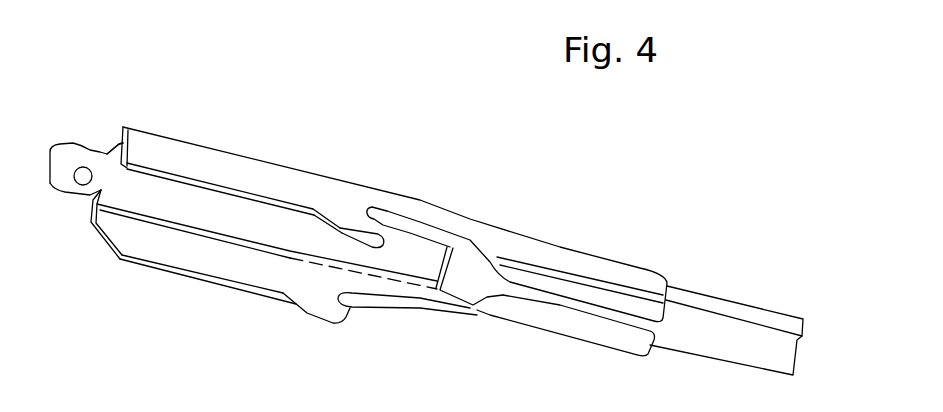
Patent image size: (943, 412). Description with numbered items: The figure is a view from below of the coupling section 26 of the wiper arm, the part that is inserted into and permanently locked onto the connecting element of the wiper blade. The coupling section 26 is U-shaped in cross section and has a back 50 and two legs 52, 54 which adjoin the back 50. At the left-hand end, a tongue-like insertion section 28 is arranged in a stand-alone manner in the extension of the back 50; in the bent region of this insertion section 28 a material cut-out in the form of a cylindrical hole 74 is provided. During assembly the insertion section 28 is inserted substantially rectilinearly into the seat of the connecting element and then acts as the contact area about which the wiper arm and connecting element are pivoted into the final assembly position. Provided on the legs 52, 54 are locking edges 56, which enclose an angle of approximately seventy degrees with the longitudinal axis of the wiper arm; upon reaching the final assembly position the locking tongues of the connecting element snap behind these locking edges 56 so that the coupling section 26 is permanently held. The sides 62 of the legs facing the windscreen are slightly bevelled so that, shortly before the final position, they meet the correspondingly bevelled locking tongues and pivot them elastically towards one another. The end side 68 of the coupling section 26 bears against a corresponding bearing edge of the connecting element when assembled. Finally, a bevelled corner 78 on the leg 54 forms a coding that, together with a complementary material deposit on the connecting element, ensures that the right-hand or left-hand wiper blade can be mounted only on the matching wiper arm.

The coupling section 26 is at (201, 126).
The insertion section 28 is at (78, 140).
The back 50 is at (157, 202).
The leg 52 is at (264, 178).
The leg 54 is at (209, 260).
The locking edges 56 is at (388, 209).
The bevelled sides 62 is at (385, 240).
The end side 68 is at (98, 143).
The cylindrical hole 74 is at (82, 168).
The bevelled corner 78 is at (103, 240).